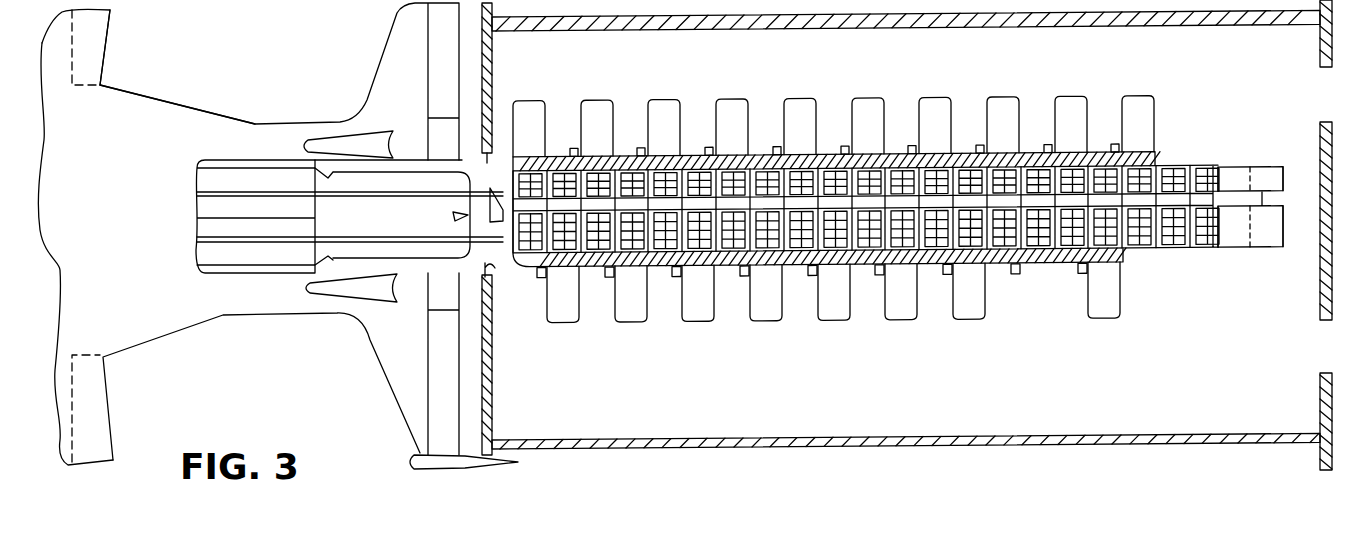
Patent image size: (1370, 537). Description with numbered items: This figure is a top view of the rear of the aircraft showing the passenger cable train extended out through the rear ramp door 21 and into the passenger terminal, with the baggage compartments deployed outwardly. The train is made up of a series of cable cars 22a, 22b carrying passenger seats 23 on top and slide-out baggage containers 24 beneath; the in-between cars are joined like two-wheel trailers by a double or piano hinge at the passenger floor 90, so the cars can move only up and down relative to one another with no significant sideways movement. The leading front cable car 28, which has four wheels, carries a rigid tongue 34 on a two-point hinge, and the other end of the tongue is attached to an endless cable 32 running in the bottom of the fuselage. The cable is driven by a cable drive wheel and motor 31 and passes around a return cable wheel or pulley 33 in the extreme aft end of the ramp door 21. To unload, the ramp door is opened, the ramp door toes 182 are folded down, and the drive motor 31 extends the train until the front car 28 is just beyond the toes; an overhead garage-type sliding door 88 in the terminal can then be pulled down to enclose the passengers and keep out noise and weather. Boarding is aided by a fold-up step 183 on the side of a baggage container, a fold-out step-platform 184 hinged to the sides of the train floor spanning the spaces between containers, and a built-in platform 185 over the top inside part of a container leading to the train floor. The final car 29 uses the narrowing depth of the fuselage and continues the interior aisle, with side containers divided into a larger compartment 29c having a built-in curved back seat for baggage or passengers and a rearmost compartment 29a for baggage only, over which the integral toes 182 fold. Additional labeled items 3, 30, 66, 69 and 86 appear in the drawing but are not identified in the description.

The base plate 3 is at (414, 460).
The rear ramp door 21 is at (333, 254).
The upper coil layer 22a is at (558, 174).
The lower coil layer 22b is at (583, 268).
The passenger seats 23 is at (820, 176).
The slide-out baggage containers 24 is at (788, 102).
The front cable car 28 is at (514, 257).
The final car 29 is at (1231, 170).
The rearmost compartment 29a is at (1268, 168).
The larger compartment 29c is at (1222, 168).
The end cell 30 is at (1198, 146).
The cable drive wheel and motor 31 is at (1238, 30).
The endless cable 32 is at (213, 222).
The return cable wheel or pulley 33 is at (460, 214).
The rigid tongue 34 is at (508, 184).
The clamp jaw 66 is at (101, 48).
The clamp arm 69 is at (162, 110).
The upper conductor 86 is at (402, 193).
The overhead garage-type sliding door 88 is at (494, 273).
The passenger floor 90 is at (648, 195).
The ramp door toes 182 is at (412, 262).
The fold-up step 183 is at (699, 156).
The fold-out step-platform 184 is at (1023, 157).
The built-in platform 185 is at (955, 150).